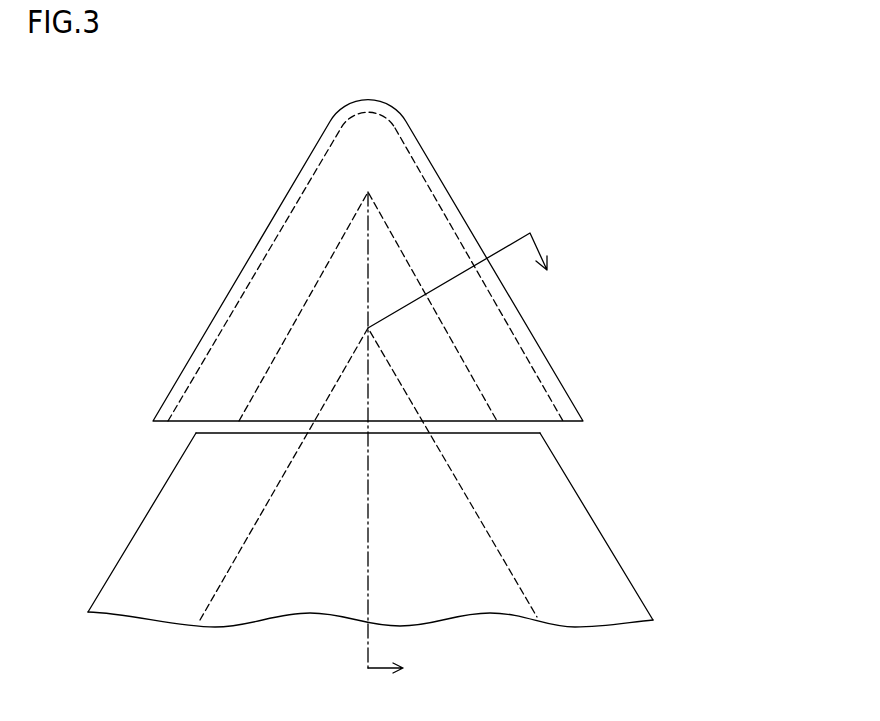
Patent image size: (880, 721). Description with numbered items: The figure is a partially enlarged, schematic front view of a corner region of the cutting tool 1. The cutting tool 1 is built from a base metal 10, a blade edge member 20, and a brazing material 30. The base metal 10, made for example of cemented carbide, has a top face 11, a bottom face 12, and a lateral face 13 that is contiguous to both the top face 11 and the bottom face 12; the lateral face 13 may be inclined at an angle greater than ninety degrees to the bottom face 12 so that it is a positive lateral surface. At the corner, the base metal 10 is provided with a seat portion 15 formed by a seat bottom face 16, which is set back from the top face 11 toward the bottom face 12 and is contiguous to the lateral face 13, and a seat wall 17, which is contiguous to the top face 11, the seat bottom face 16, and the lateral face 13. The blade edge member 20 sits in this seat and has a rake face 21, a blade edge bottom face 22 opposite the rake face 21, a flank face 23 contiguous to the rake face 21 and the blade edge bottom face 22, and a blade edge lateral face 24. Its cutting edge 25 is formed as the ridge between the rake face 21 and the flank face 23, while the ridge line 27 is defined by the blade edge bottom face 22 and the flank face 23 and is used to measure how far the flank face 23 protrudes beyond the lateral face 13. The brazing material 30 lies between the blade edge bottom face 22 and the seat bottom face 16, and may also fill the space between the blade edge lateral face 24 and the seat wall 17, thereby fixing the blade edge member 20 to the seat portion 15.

The cutting tool 1 is at (596, 90).
The base metal 10 is at (572, 672).
The top face 11 is at (480, 603).
The bottom face 12 is at (510, 603).
The lateral face 13 is at (547, 603).
The seat portion 15 is at (605, 322).
The seat bottom face 16 is at (440, 357).
The seat wall 17 is at (520, 421).
The blade edge member 20 is at (540, 52).
The rake face 21 is at (367, 110).
The blade edge bottom face 22 is at (375, 155).
The flank face 23 is at (425, 161).
The blade edge lateral face 24 is at (267, 433).
The cutting edge 25 is at (418, 133).
The ridge line 27 is at (287, 217).
The brazing material 30 is at (477, 433).